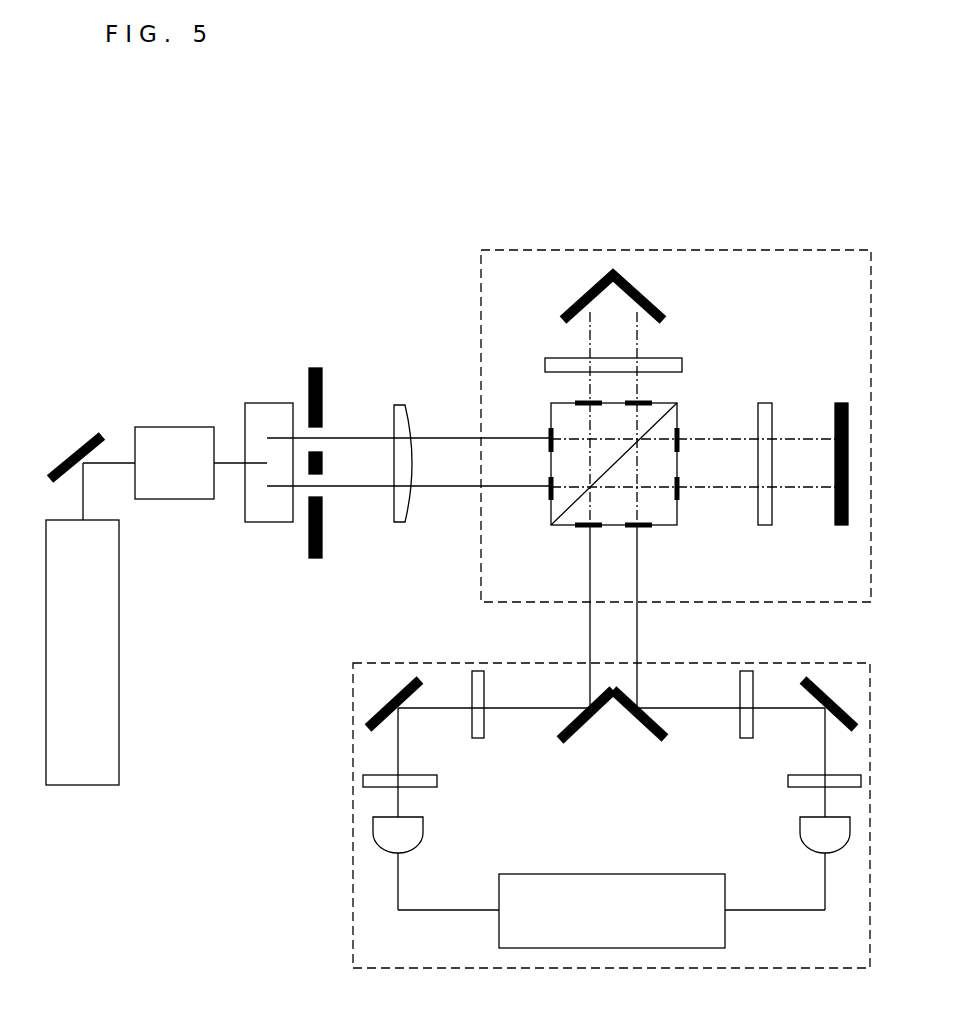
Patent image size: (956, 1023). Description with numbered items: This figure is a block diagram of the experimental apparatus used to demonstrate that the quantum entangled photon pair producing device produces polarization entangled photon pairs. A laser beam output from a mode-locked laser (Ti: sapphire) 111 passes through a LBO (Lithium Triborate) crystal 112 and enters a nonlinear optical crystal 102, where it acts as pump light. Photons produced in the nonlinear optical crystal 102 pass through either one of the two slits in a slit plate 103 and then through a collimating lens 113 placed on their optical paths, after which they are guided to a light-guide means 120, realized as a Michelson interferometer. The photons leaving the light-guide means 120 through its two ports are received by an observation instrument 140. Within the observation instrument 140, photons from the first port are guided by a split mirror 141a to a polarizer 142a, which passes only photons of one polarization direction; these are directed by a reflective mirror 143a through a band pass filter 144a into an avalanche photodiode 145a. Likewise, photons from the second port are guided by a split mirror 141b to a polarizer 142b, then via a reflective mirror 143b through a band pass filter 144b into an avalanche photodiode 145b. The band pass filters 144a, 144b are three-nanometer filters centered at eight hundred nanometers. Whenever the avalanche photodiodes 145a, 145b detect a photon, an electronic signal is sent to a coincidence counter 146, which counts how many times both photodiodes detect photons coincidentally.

The mode-locked laser (Ti: sapphire) 111 is at (119, 655).
The LBO (Lithium Triborate) crystal 112 is at (175, 427).
The nonlinear optical crystal 102 is at (270, 403).
The slit plate 103 is at (317, 368).
The collimating lens 113 is at (403, 405).
The light-guide means 120 is at (783, 250).
The observation instrument 140 is at (353, 812).
The split mirror 141a is at (575, 742).
The split mirror 141b is at (655, 742).
The polarizer 142a is at (478, 671).
The polarizer 142b is at (747, 671).
The reflective mirror 143a is at (410, 676).
The reflective mirror 143b is at (812, 676).
The band pass filter 144a is at (437, 787).
The band pass filter 144b is at (788, 787).
The avalanche photodiode 145a is at (423, 843).
The avalanche photodiode 145b is at (800, 843).
The coincidence counter 146 is at (612, 874).